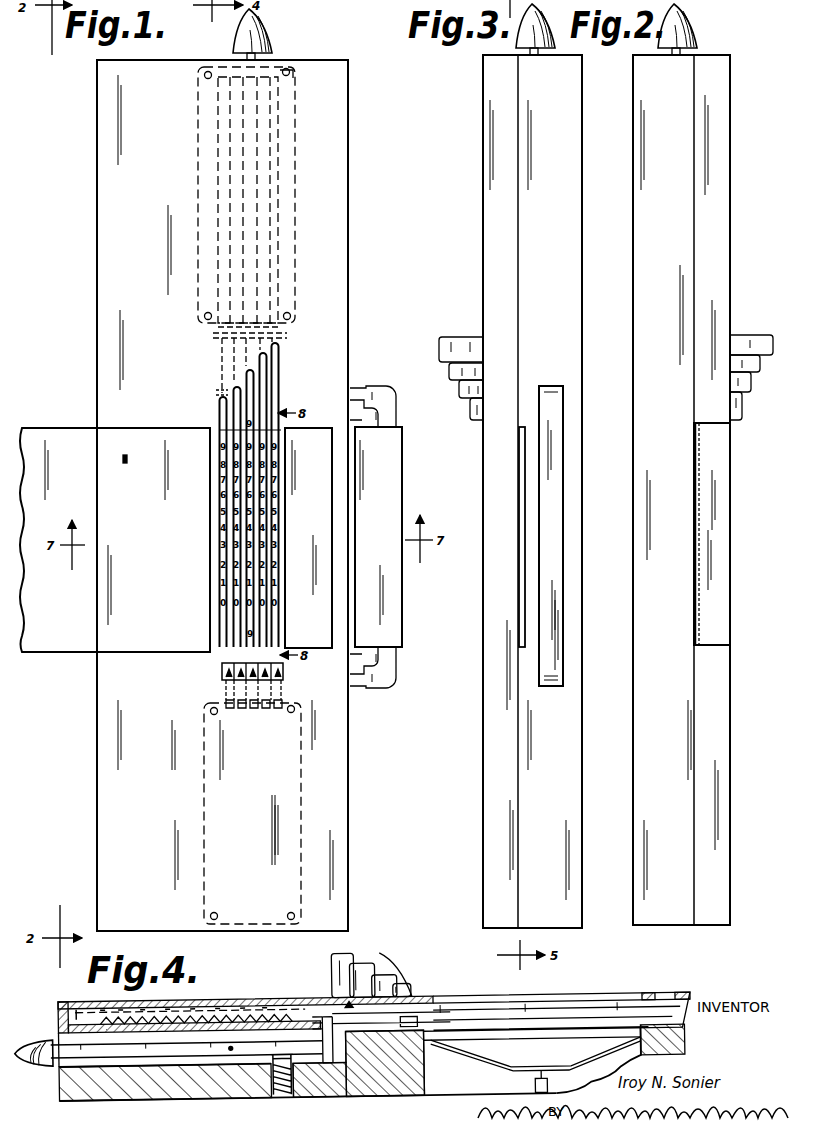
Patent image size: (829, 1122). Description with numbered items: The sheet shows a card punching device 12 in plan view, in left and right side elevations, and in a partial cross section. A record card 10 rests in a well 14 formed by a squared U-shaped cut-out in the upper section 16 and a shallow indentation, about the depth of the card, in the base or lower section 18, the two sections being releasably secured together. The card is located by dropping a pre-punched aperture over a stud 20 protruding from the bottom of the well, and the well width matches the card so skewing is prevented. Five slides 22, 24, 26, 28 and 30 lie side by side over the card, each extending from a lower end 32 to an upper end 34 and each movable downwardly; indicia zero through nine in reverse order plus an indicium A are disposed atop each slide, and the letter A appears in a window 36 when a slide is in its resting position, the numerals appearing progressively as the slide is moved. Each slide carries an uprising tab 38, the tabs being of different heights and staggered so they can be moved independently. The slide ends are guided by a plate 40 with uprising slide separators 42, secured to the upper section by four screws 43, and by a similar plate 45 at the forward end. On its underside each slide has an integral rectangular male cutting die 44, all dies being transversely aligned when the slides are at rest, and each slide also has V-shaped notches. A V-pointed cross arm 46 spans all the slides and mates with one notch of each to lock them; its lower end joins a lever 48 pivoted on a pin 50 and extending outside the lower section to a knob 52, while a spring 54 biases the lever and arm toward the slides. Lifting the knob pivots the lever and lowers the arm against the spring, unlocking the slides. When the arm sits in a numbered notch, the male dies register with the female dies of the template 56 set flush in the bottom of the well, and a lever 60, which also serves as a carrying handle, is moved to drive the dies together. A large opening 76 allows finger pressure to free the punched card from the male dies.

In FIG. 1, the card 10 is at (48, 428).
In FIG. 3, the card 10 is at (521, 427).
In FIG. 2, the card 10 is at (697, 648).
In FIG. 1, the punching device 12 is at (350, 272).
In FIG. 1, the well 14 is at (140, 653).
In FIG. 2, the well 14 is at (714, 622).
In FIG. 3, the upper section 16 is at (483, 278).
In FIG. 2, the upper section 16 is at (730, 248).
In FIG. 3, the lower section 18 is at (582, 243).
In FIG. 2, the lower section 18 is at (632, 266).
In FIG. 1, the stud 20 is at (127, 459).
In FIG. 2, the stud 20 is at (700, 452).
In FIG. 1, the slide 22 is at (267, 382).
In FIG. 1, the slide 24 is at (254, 394).
In FIG. 1, the slide 26 is at (241, 402).
In FIG. 1, the slide 28 is at (221, 414).
In FIG. 1, the slide 30 is at (220, 428).
In FIG. 4, the slide 30 is at (518, 1002).
In FIG. 1, the lower end of slide 32 is at (252, 708).
In FIG. 1, the upper end of slide 34 is at (296, 68).
In FIG. 1, the window 36 is at (222, 672).
In FIG. 4, the window 36 is at (660, 1002).
In FIG. 1, the tab 38 is at (279, 352).
In FIG. 3, the tab 38 is at (476, 405).
In FIG. 2, the tab 38 is at (747, 412).
In FIG. 4, the tab 38 is at (378, 978).
In FIG. 1, the plate 40 is at (297, 190).
In FIG. 4, the plate 40 is at (312, 1022).
In FIG. 4, the slide separators 42 is at (275, 1012).
In FIG. 1, the screws 43 is at (200, 75).
In FIG. 1, the male cutting die 44 is at (216, 393).
In FIG. 4, the male cutting die 44 is at (391, 1013).
In FIG. 1, the plate 45 is at (204, 782).
In FIG. 1, the cross arm 46 is at (213, 336).
In FIG. 4, the cross arm 46 is at (318, 1037).
In FIG. 4, the lever 48 is at (258, 1047).
In FIG. 4, the pin 50 is at (230, 1049).
In FIG. 1, the knob 52 is at (272, 30).
In FIG. 3, the knob 52 is at (514, 40).
In FIG. 2, the knob 52 is at (697, 30).
In FIG. 4, the knob 52 is at (45, 1042).
In FIG. 4, the spring 54 is at (283, 1098).
In FIG. 4, the template 56 is at (543, 1050).
In FIG. 1, the lever 60 is at (372, 390).
In FIG. 3, the lever 60 is at (548, 386).
In FIG. 1, the opening 76 is at (323, 626).